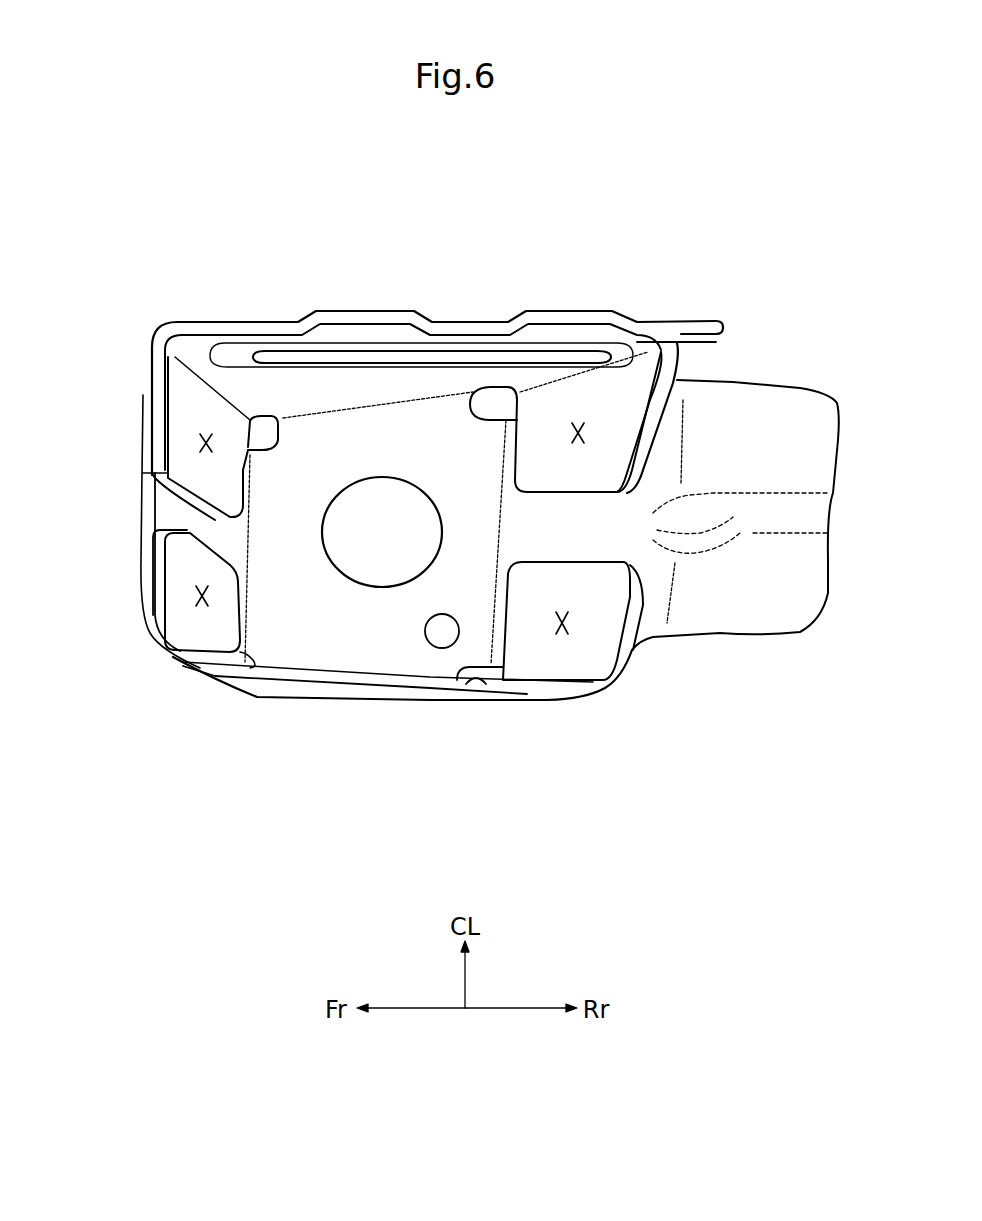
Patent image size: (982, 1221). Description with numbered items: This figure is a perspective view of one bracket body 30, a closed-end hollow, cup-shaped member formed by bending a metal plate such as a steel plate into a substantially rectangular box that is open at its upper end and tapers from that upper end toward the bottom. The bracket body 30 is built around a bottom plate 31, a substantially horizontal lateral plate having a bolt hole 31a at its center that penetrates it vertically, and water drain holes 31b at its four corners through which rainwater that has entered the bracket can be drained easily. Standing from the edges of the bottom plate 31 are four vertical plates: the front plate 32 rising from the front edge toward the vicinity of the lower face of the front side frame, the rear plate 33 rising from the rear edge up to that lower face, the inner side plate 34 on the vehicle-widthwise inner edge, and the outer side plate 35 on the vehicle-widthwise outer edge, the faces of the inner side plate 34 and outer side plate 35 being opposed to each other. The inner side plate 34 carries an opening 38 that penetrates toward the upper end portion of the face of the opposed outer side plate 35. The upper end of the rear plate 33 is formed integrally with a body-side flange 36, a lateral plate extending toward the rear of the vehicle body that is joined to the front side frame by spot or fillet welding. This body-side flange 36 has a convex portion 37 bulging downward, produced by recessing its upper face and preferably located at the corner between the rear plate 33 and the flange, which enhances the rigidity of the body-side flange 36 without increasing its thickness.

The bracket body 30 is at (680, 266).
The bottom plate 31 is at (303, 637).
The bolt hole 31a is at (358, 576).
The water drain hole 31b is at (500, 398).
The front plate 32 is at (173, 513).
The rear plate 33 is at (593, 527).
The inner side plate 34 is at (218, 320).
The outer side plate 35 is at (407, 687).
The body-side flange 36 is at (783, 577).
The body-side convex portion 37 is at (697, 545).
The opening 38 is at (352, 378).